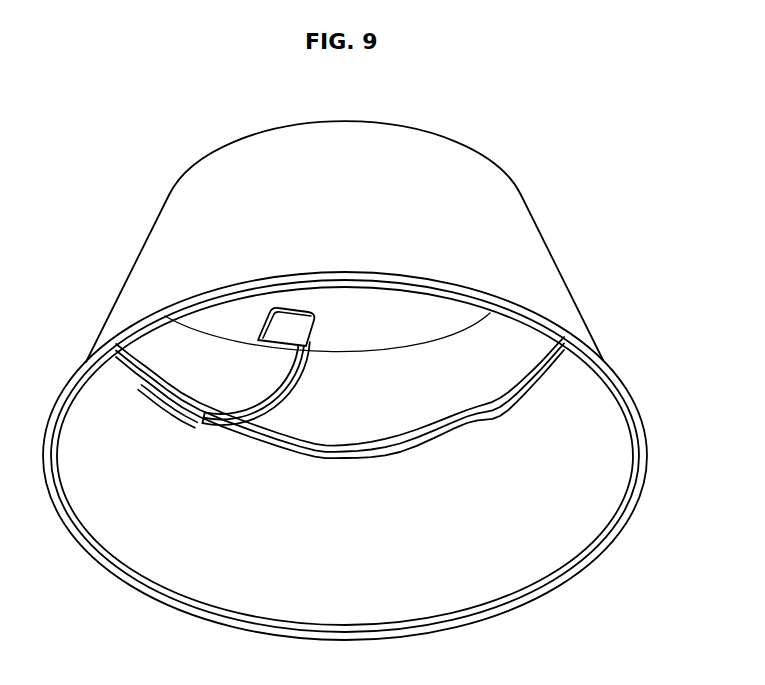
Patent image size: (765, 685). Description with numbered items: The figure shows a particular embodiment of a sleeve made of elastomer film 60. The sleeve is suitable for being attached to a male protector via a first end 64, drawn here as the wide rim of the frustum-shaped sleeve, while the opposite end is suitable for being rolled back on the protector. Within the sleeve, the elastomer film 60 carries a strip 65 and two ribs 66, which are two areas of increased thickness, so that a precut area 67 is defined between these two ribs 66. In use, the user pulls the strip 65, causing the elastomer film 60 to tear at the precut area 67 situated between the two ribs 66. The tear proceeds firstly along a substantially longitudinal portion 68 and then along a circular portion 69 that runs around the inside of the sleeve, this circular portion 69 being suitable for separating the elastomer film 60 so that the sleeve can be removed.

The elastomer film 60 is at (147, 258).
The first end 64 is at (407, 624).
The strip 65 is at (317, 328).
The ribs 66 is at (146, 385).
The precut area 67 is at (205, 412).
The substantially longitudinal portion 68 is at (306, 393).
The circular portion 69 is at (343, 466).